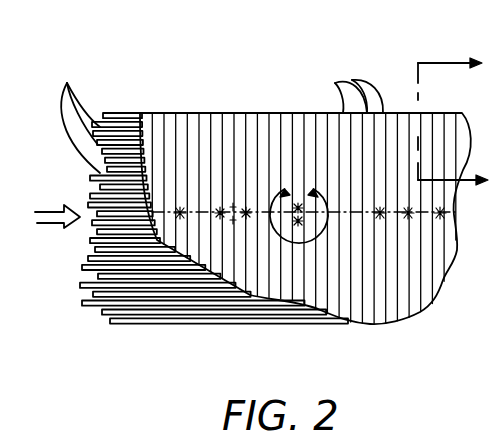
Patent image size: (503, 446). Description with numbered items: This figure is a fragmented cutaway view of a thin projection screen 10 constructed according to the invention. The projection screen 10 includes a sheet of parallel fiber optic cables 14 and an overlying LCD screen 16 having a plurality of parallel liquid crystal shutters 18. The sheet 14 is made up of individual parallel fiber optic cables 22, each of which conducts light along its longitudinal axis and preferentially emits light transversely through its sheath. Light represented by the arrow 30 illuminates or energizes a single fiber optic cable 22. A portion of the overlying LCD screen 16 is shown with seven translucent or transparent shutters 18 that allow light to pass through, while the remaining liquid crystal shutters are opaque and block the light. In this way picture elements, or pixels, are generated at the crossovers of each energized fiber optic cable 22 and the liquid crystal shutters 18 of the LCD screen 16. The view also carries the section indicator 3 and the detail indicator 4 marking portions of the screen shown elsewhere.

The projection screen 10 is at (197, 80).
The sheet of parallel fiber optic cables 14 is at (133, 326).
The LCD screen 16 is at (257, 110).
The liquid crystal shutters 18 is at (340, 94).
The fiber optic cable 22 is at (72, 116).
The arrow 30 is at (43, 224).
The detail area of FIG. 4 is at (299, 206).
The section line for FIG. 3 is at (460, 126).